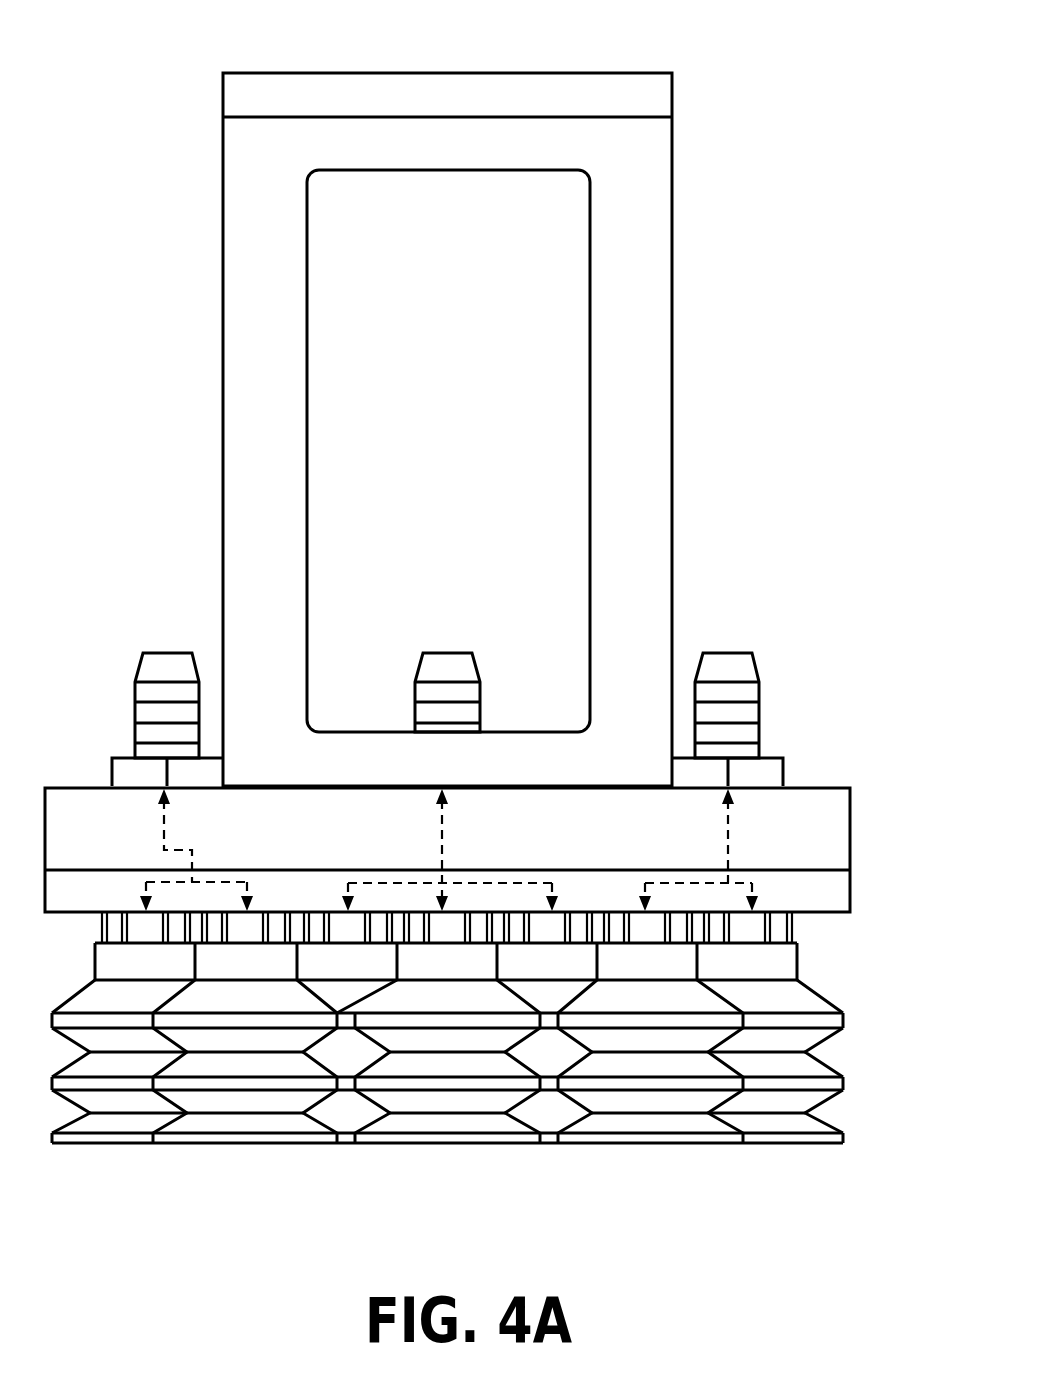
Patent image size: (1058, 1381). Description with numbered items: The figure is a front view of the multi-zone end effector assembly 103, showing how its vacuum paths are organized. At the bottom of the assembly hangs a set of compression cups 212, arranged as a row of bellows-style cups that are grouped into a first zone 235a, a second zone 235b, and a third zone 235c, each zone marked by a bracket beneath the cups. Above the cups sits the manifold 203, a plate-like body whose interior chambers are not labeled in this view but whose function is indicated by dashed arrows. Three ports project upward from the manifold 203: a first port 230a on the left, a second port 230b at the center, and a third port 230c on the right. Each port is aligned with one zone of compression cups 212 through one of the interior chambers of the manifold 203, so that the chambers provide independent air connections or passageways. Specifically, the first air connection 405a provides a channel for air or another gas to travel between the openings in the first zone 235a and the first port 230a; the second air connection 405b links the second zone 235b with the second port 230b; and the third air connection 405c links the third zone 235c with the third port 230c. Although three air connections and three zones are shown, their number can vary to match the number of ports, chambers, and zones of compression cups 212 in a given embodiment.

The multi-zone end effector assembly 103 is at (160, 44).
The manifold 203 is at (857, 788).
The compression cups 212 is at (813, 990).
The first port 230a is at (141, 662).
The second port 230b is at (421, 665).
The third port 230c is at (753, 662).
The first zone 235a is at (322, 1147).
The second zone 235b is at (570, 1147).
The third zone 235c is at (845, 1147).
The first air connection 405a is at (192, 866).
The second air connection 405b is at (442, 856).
The third air connection 405c is at (728, 856).